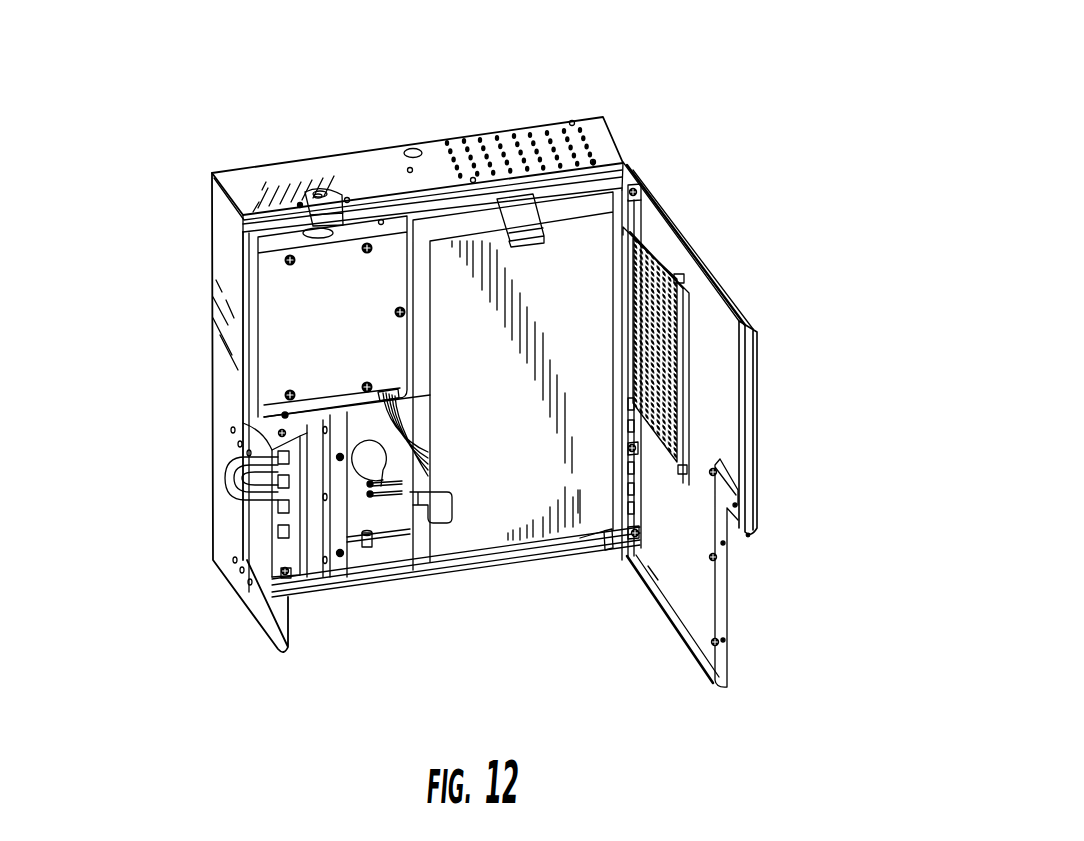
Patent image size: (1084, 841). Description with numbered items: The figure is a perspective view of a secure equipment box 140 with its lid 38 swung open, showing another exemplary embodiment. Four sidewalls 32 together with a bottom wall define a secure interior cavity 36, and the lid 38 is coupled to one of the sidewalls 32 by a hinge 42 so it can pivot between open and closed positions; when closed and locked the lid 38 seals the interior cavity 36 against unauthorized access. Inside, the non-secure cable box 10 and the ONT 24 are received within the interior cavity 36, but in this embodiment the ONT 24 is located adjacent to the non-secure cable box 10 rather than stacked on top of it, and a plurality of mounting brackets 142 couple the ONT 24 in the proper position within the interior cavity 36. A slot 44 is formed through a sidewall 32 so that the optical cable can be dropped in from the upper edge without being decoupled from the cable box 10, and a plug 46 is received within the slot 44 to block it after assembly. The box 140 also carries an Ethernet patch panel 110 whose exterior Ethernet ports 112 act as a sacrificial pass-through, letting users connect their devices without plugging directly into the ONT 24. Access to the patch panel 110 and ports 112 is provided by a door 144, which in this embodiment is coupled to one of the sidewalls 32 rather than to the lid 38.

The non-secure cable box 10 is at (393, 272).
The ONT 24 is at (586, 256).
The sidewalls 32 is at (216, 250).
The interior cavity 36 is at (380, 568).
The lid 38 is at (704, 428).
The hinge 42 is at (607, 545).
The slot 44 is at (305, 186).
The plug 46 is at (337, 193).
The Ethernet patch panel 110 is at (300, 588).
The exterior Ethernet ports 112 is at (270, 533).
The equipment box 140 is at (824, 252).
The mounting brackets 142 is at (516, 208).
The door 144 is at (257, 547).